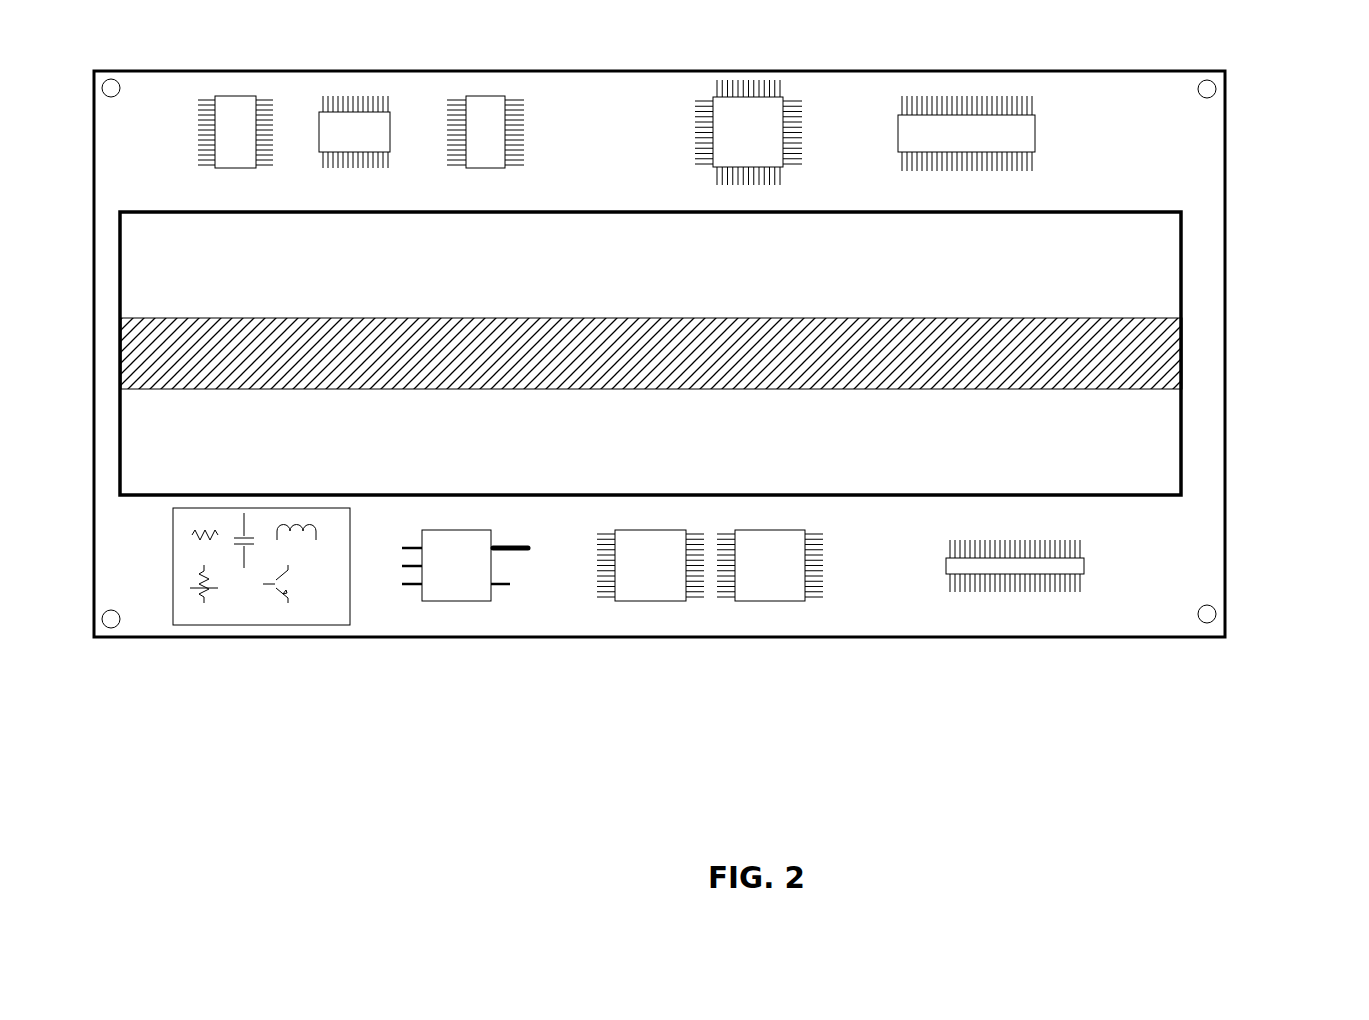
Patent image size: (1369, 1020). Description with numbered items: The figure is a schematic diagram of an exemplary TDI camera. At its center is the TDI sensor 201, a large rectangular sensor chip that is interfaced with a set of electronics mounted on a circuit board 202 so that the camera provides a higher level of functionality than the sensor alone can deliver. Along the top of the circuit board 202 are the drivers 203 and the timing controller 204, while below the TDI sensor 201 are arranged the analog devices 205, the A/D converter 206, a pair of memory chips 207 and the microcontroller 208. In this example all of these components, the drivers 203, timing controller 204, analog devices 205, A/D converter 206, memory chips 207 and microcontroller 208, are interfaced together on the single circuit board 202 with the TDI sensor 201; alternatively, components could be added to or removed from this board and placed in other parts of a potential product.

The TDI sensor 201 is at (1098, 256).
The circuit board 202 is at (659, 354).
The drivers 203 is at (235, 90).
The timing controller 204 is at (921, 76).
The analog devices 205 is at (244, 608).
The A/D converter 206 is at (460, 631).
The memory chips 207 is at (712, 630).
The microcontroller 208 is at (1017, 588).